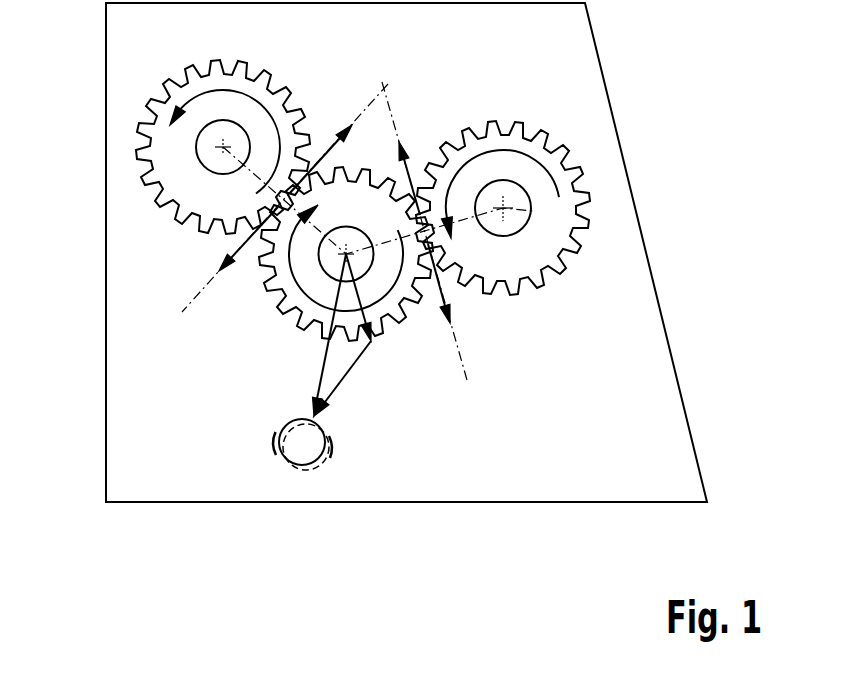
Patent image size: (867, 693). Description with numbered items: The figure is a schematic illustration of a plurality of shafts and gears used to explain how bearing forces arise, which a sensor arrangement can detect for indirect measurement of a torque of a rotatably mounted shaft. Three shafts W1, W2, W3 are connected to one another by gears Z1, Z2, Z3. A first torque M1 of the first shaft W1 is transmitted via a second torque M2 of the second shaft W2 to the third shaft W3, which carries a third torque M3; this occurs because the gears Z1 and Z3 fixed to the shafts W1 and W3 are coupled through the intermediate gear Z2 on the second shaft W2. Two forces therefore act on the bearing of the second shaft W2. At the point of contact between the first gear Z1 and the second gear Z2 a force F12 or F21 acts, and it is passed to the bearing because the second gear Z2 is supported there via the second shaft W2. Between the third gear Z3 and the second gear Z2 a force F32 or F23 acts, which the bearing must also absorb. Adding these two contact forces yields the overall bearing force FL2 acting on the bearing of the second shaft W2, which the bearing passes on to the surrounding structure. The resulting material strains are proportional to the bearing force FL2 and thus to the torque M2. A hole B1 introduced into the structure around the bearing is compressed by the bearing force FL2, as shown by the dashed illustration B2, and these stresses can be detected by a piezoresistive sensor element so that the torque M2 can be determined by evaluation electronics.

The first torque M1 is at (535, 157).
The first gear Z1 is at (565, 168).
The first shaft W1 is at (533, 212).
The second torque M2 is at (290, 271).
The second gear Z2 is at (280, 302).
The second shaft W2 is at (334, 270).
The third torque M3 is at (187, 104).
The third gear Z3 is at (137, 122).
The third shaft W3 is at (196, 148).
The hole B1 is at (297, 467).
The dashed illustration of compressed hole B2 is at (328, 456).
The force between third gear and second gear F23 is at (321, 143).
The force between third gear and second gear F32 is at (274, 322).
The force at contact between first gear and second gear F21 is at (420, 165).
The force at contact between first gear and second gear F12 is at (427, 304).
The bearing force FL2 is at (304, 335).